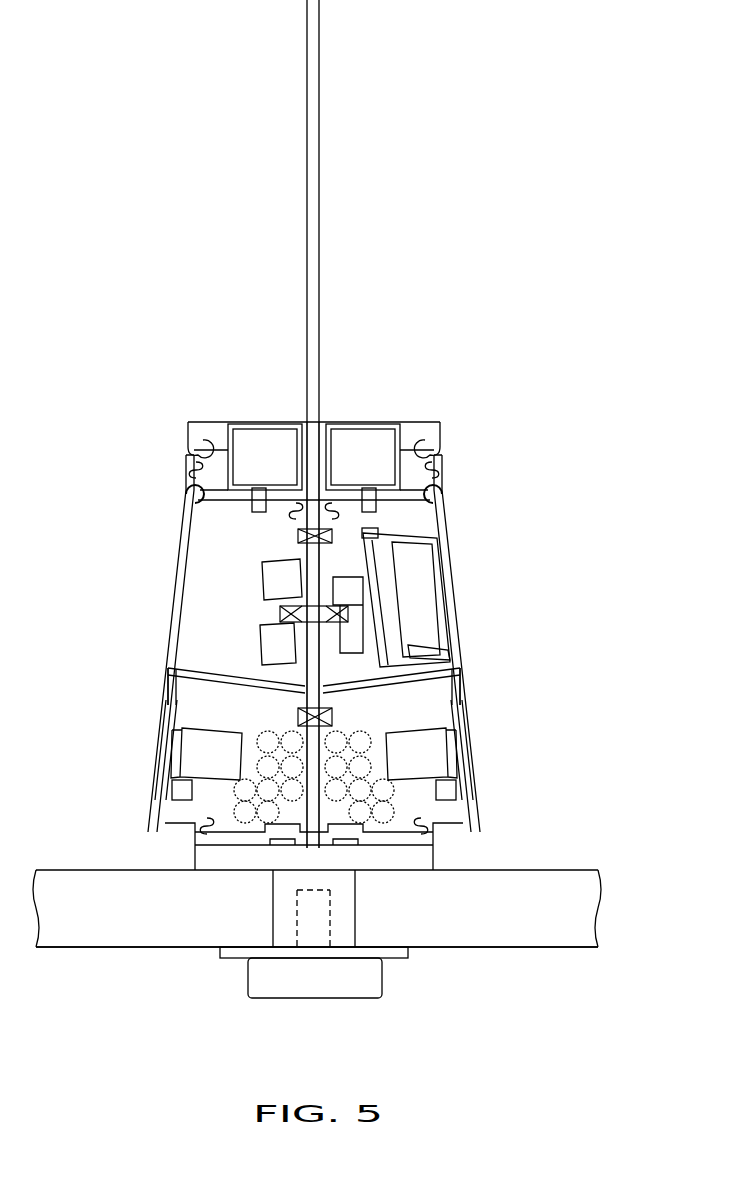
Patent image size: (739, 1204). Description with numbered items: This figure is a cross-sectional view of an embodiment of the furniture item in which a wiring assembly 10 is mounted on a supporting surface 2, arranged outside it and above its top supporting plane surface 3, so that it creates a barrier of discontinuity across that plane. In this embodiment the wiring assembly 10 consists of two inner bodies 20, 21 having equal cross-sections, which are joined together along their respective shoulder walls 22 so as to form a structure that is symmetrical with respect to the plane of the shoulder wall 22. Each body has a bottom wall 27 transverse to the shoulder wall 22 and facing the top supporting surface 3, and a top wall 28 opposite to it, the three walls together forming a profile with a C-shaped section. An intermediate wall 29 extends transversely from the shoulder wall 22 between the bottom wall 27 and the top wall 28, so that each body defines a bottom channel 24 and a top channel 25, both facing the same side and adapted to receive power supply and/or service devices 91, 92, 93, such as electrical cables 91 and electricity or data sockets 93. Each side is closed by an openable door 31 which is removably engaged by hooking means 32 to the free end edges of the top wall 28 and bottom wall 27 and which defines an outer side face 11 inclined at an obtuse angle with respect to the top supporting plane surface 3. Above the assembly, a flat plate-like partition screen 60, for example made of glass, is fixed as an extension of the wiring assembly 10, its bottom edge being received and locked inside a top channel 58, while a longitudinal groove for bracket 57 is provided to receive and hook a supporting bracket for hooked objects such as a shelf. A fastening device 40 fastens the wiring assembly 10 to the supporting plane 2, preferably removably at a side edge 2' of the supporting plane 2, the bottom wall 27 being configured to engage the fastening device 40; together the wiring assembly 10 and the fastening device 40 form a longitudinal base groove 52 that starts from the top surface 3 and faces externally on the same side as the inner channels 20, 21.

The wiring assembly 10 is at (512, 350).
The partition screen 60 is at (319, 192).
The longitudinal groove for bracket 57 is at (198, 440).
The top channel 58 is at (305, 450).
The hooking means 32 is at (182, 483).
The top wall 28 is at (190, 500).
The top channel 25 is at (238, 510).
The outer side face 11 is at (158, 565).
The shoulder wall 22 is at (398, 548).
The power supply and/or service device 92 is at (432, 590).
The intermediate wall 29 is at (240, 680).
The openable door 31 is at (196, 682).
The inner body 20 is at (216, 692).
The inner body 21 is at (390, 702).
The bottom channel 24 is at (200, 738).
The data socket 93 is at (445, 760).
The electrical cable 91 is at (362, 795).
The longitudinal base groove 52 is at (447, 843).
The top supporting plane surface 3 is at (67, 868).
The supporting surface 2 is at (317, 969).
The bottom wall 27 is at (215, 845).
The fastening device 40 is at (256, 866).
The side edge 2' is at (314, 989).